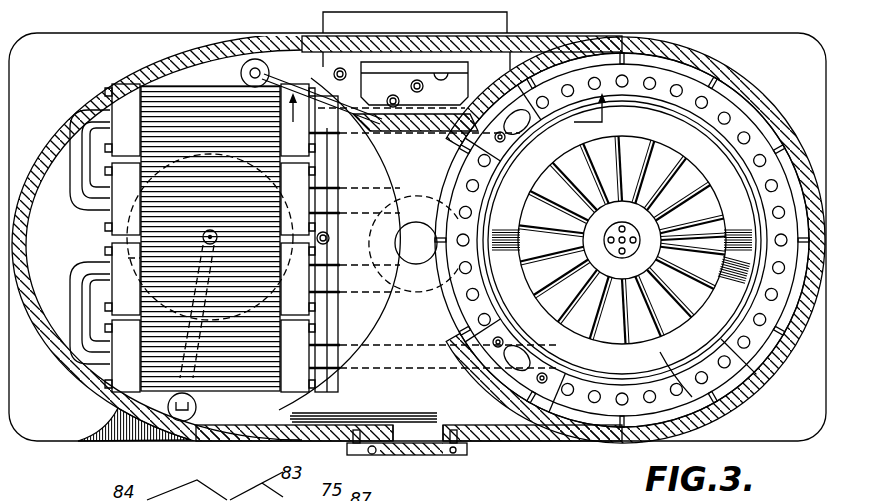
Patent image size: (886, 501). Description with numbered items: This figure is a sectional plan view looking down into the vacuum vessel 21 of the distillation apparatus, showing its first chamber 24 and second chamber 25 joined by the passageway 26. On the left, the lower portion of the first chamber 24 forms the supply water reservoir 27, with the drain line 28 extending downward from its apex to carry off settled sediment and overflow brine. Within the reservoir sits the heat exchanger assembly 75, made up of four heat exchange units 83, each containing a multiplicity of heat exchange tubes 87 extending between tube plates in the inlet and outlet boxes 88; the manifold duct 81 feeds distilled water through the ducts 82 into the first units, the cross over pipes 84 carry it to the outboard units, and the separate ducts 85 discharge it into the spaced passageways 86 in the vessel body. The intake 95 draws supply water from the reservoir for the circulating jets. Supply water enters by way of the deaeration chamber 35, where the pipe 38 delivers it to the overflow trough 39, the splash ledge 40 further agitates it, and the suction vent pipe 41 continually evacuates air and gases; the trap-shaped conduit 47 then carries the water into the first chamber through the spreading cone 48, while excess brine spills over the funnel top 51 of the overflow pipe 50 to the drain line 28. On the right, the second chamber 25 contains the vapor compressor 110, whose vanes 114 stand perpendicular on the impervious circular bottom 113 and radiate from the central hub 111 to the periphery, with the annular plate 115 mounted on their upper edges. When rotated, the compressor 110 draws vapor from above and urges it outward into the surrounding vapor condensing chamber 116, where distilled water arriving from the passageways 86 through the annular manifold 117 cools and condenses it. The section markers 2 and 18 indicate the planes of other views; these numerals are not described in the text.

The section line 2- 2 is at (455, 124).
The rotor hub 18 is at (514, 192).
The vacuum vessel 21 is at (124, 407).
The first chamber 24 is at (50, 345).
The second chamber 25 is at (742, 87).
The passageway 26 is at (477, 425).
The supply water reservoir 27 is at (127, 220).
The drain line 28 is at (127, 258).
The deaeration chamber 35 is at (495, 62).
The pipe 38 is at (417, 80).
The overflow trough 39 is at (440, 73).
The splash ledge 40 is at (456, 102).
The suction vent pipe 41 is at (395, 108).
The conduit 47 is at (277, 72).
The spreading cone 48 is at (241, 73).
The overflow pipe 50 is at (178, 382).
The funnel top 51 is at (196, 407).
The heat exchanger assembly 75 is at (162, 82).
The manifold duct 81 is at (470, 175).
The ducts 82 is at (332, 170).
The heat exchange units 83 is at (122, 238).
The cross over pipes 84 is at (70, 190).
The ducts 85 is at (337, 150).
The passageways 86 is at (380, 157).
The heat exchange tubes 87 is at (183, 110).
The inlet and outlet boxes 88 is at (298, 238).
The intake 95 is at (329, 237).
The vapor compressor 110 is at (757, 376).
The central hub 111 is at (574, 242).
The circular bottom 113 is at (640, 336).
The vanes 114 is at (627, 160).
The annular plate 115 is at (720, 412).
The vapor condensing chamber 116 is at (718, 146).
The annular manifold 117 is at (578, 400).